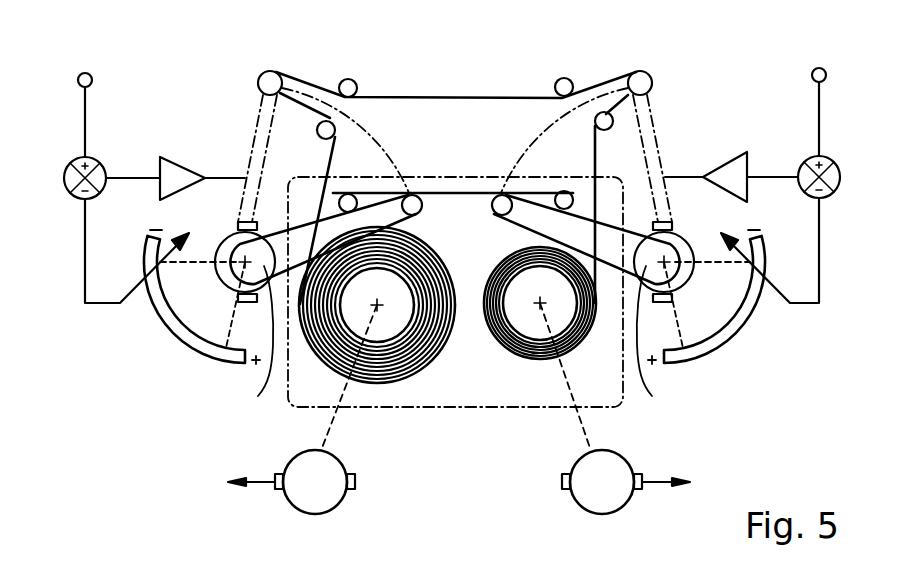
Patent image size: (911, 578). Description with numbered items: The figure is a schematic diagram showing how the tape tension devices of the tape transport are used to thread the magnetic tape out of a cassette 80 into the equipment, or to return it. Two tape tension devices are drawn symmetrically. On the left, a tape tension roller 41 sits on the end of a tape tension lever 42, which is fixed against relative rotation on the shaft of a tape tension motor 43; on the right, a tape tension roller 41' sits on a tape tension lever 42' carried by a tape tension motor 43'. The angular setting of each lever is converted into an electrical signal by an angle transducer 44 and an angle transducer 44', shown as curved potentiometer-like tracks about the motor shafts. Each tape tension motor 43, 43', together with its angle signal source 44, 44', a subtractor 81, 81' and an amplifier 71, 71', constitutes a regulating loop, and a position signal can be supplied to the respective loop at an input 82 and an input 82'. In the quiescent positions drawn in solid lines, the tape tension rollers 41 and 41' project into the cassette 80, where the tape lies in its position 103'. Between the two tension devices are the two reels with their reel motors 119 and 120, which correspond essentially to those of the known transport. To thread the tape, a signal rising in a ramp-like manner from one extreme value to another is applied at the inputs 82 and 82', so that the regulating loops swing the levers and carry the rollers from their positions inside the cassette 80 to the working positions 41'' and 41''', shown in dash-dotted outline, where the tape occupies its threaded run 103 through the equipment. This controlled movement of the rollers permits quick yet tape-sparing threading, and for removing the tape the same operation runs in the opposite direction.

The tape tension roller 41 is at (417, 177).
The tape tension roller 41' is at (495, 178).
The working position of tape tension roller 41'' is at (313, 127).
The working position of tape tension roller 41''' is at (629, 126).
The tape tension lever 42 is at (256, 346).
The tape tension lever 42' is at (655, 345).
The tape tension motor 43 is at (283, 279).
The tape tension motor 43' is at (627, 279).
The angle transducer 44 is at (177, 299).
The angle transducer 44' is at (732, 299).
The amplifier 71 is at (184, 166).
The amplifier 71' is at (721, 165).
The cassette 80 is at (477, 393).
The subtractor 81 is at (64, 178).
The subtractor 81' is at (844, 177).
The position signal input 82 is at (91, 64).
The position signal input 82' is at (824, 60).
The magnetic tape in threaded position 103 is at (456, 181).
The magnetic tape position in cassette 103' is at (453, 213).
The reel motor 119 is at (327, 492).
The reel motor 120 is at (617, 488).